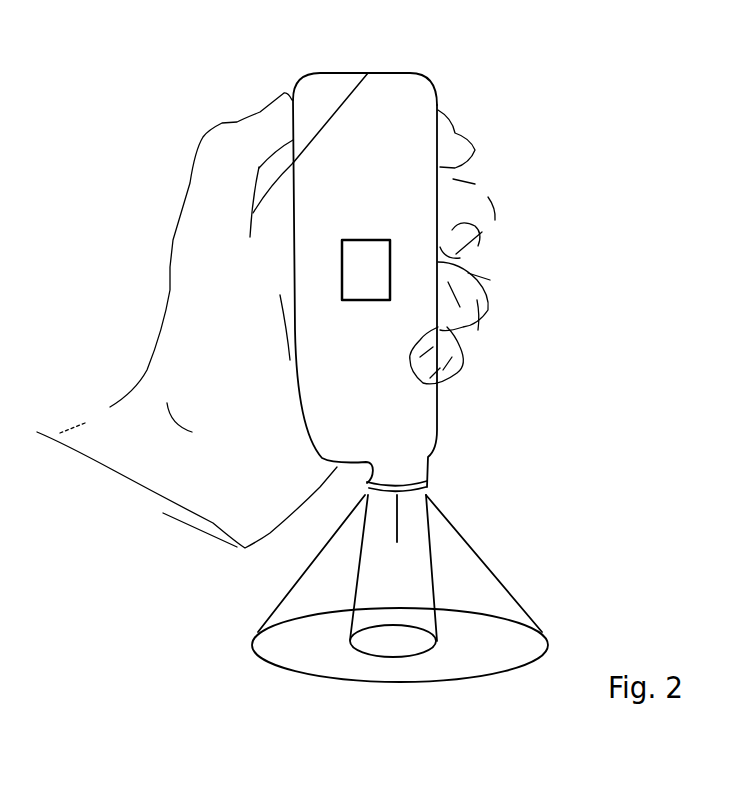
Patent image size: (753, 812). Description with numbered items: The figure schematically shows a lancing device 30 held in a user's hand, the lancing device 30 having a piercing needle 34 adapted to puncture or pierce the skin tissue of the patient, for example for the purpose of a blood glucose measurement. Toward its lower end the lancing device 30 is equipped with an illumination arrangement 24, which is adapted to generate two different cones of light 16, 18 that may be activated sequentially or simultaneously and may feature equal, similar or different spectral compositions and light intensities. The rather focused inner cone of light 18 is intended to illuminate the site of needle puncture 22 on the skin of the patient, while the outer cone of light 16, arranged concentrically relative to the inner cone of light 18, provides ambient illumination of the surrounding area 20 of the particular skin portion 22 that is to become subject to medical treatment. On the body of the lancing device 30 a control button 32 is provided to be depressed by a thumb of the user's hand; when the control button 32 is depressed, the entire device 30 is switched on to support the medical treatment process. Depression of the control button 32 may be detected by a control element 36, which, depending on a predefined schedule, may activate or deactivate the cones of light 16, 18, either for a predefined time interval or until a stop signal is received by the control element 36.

The lancing device 30 is at (454, 254).
The control button 32 is at (319, 95).
The control element 36 is at (376, 245).
The illumination arrangement 24 is at (441, 480).
The piercing needle 34 is at (397, 525).
The outer cone of light 16 is at (480, 552).
The inner cone of light 18 is at (350, 607).
The surrounding area 20 is at (485, 667).
The site of needle puncture 22 is at (382, 648).